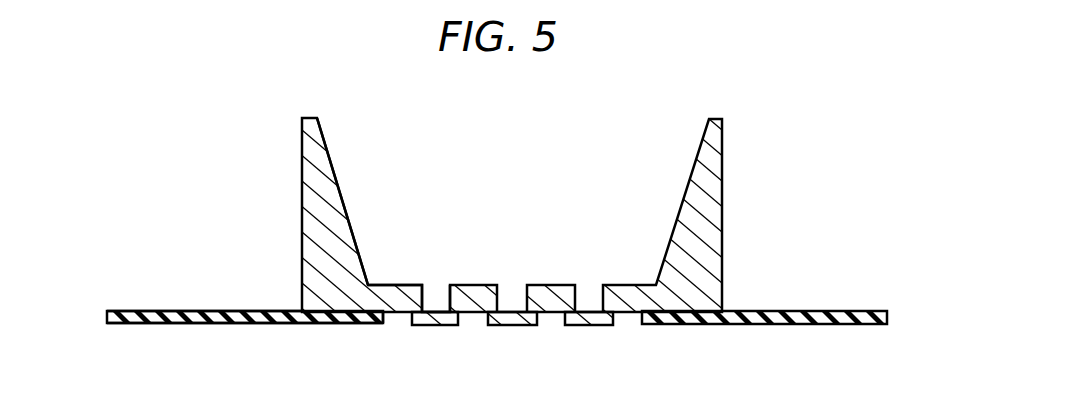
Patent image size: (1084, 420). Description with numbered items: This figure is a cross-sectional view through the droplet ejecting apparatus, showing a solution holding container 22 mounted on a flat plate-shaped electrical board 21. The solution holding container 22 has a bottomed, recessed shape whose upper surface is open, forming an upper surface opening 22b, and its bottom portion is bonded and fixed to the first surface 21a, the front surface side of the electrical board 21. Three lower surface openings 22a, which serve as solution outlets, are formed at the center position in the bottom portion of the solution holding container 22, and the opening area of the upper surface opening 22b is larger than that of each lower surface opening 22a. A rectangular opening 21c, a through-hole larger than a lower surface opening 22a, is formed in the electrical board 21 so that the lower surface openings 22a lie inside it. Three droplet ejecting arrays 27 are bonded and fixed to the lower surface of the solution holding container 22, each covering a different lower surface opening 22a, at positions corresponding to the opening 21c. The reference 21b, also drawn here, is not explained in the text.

The electrical board 21 is at (820, 311).
The first surface 21a is at (185, 310).
The lower surface of substrate 21b is at (197, 324).
The opening 21c is at (392, 323).
The solution holding container 22 is at (308, 200).
The lower surface opening 22a is at (423, 303).
The upper surface opening 22b is at (330, 153).
The droplet ejecting array 27 is at (435, 327).